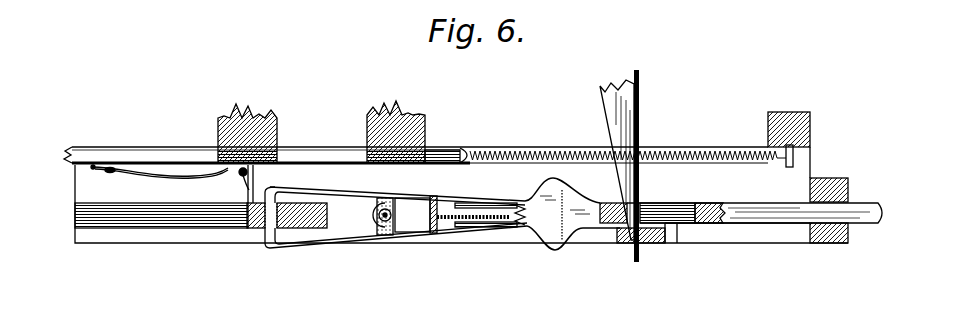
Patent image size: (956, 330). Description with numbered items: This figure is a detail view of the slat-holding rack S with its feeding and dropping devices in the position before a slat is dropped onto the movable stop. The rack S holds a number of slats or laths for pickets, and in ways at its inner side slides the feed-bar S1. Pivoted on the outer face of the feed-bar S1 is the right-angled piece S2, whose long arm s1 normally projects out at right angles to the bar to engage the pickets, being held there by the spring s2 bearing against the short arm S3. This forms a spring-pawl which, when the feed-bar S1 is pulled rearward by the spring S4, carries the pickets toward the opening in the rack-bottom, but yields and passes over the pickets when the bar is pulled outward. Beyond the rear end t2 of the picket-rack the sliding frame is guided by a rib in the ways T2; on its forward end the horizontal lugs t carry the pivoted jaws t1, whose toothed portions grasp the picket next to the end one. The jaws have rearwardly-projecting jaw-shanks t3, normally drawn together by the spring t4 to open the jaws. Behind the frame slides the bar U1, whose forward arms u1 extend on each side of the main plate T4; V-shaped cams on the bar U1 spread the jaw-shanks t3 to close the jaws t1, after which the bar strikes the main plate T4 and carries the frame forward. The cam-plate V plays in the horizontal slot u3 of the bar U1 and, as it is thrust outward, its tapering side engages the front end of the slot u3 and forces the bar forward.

The feed-bar S1 is at (333, 158).
The short arm S3 is at (215, 165).
The spring S4 is at (579, 150).
The cam-plate V is at (641, 131).
The spring s2 is at (173, 177).
The right-angled piece S2 is at (246, 190).
The long arm s1 is at (252, 193).
The rack S is at (201, 204).
The rear end of the picket-rack t2 is at (277, 249).
The jaws t1 is at (331, 187).
The ways T2 is at (355, 220).
The horizontal lugs t is at (401, 216).
The main plate T4 is at (442, 203).
The arms u1 is at (473, 203).
The jaw-shanks t3 is at (498, 200).
The spring t4 is at (567, 214).
The bar U1 is at (741, 210).
The horizontal slot u3 is at (677, 233).